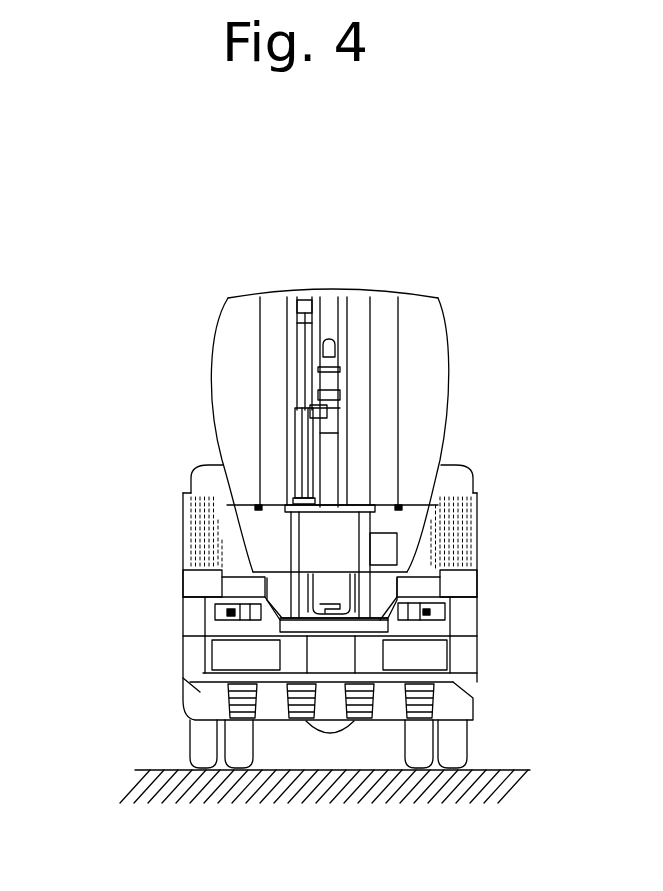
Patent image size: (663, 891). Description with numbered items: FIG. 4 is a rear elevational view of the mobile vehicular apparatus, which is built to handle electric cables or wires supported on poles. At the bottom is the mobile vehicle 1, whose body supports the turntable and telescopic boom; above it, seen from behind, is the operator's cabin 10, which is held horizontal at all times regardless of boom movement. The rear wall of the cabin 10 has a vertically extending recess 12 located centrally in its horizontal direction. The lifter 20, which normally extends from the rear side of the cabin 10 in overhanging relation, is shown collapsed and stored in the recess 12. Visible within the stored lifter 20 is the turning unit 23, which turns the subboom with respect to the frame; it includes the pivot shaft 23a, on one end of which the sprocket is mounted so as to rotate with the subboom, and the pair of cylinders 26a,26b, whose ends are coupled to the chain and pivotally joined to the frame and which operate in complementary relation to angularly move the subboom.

The mobile vehicle 1 is at (473, 477).
The operator's cabin 10 is at (455, 369).
The recess 12 is at (362, 312).
The lifter 20 is at (357, 404).
The turning unit 23 is at (302, 297).
The pivot shaft 23a is at (356, 300).
The cylinders 26a,26b is at (297, 433).